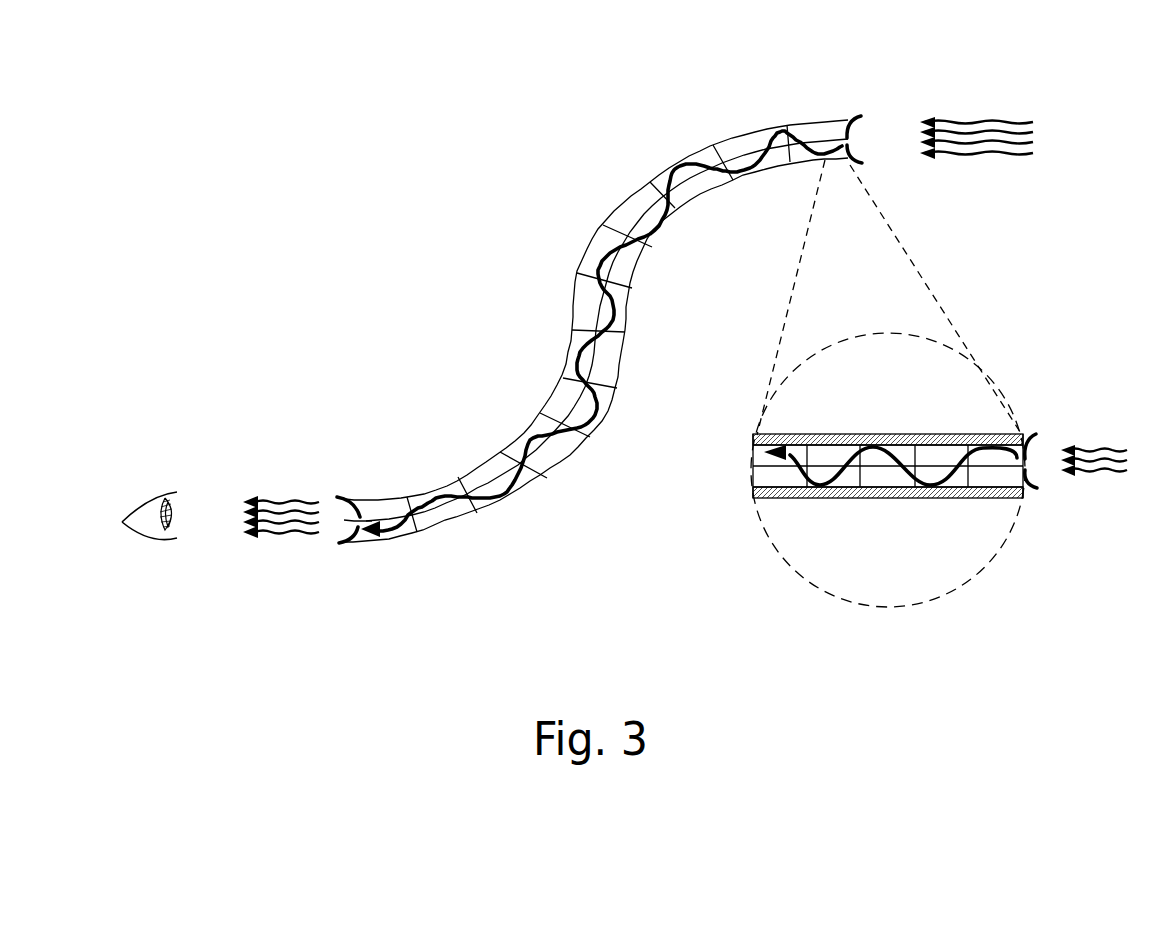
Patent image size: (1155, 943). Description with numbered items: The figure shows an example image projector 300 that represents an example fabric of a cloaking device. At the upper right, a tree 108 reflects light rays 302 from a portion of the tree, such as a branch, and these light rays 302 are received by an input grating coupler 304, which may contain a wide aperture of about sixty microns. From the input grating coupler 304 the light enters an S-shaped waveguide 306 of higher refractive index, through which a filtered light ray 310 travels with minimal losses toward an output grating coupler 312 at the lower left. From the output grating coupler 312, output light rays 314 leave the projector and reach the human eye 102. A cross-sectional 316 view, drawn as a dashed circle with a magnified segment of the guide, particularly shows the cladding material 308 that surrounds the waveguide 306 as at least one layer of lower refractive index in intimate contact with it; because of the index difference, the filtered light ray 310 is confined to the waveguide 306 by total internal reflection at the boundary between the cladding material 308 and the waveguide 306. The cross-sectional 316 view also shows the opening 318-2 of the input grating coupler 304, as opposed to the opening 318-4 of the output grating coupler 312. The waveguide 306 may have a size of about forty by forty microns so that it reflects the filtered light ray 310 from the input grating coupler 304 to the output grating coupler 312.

The image projector 300 is at (162, 47).
The human eye 102 is at (150, 513).
The tree 108 is at (1002, 138).
The light rays 302 is at (970, 160).
The input grating coupler 304 is at (848, 117).
The waveguide 306 is at (640, 200).
The cladding material 308 is at (905, 434).
The filtered light ray 310 is at (578, 330).
The output grating coupler 312 is at (347, 545).
The output light rays 314 is at (283, 500).
The cross-sectional 316 is at (920, 333).
The opening of the input grating coupler 318-2 is at (1027, 445).
The opening of the output grating coupler 318-4 is at (365, 515).